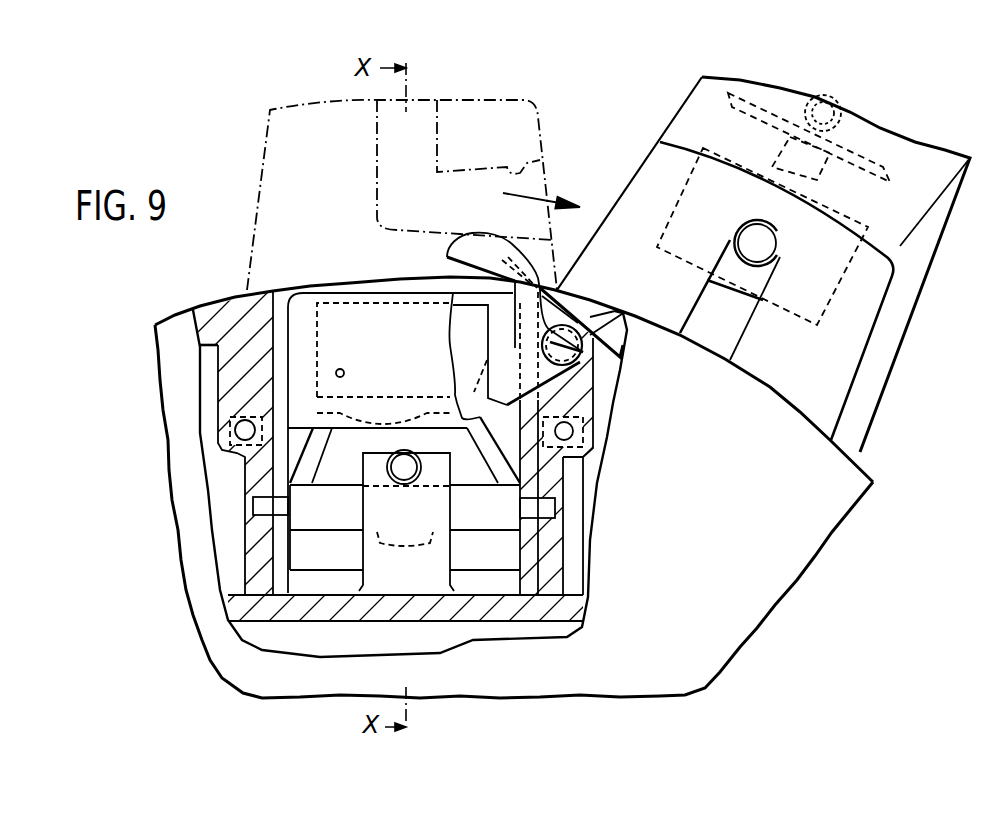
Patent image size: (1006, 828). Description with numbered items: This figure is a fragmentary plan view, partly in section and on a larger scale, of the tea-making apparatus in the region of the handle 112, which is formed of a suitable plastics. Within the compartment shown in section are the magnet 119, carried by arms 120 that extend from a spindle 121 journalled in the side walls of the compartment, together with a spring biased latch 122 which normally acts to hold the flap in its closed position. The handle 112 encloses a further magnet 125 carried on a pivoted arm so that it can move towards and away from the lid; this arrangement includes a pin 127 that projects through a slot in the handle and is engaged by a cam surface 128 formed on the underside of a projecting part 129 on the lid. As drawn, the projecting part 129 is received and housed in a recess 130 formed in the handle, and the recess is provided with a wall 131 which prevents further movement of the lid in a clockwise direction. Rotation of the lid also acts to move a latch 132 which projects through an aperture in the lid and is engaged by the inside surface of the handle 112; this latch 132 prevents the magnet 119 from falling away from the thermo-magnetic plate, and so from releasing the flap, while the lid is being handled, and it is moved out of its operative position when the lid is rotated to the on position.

The handle 112 is at (932, 210).
The magnet 119 is at (467, 315).
The arms 120 is at (314, 438).
The spindle 121 is at (467, 517).
The spring biased latch 122 is at (425, 573).
The further magnet 125 is at (838, 277).
The pin 127 is at (768, 253).
The cam surface 128 is at (533, 160).
The projecting part 129 is at (503, 113).
The recess 130 is at (850, 343).
The wall 131 is at (873, 388).
The latch 132 is at (507, 368).